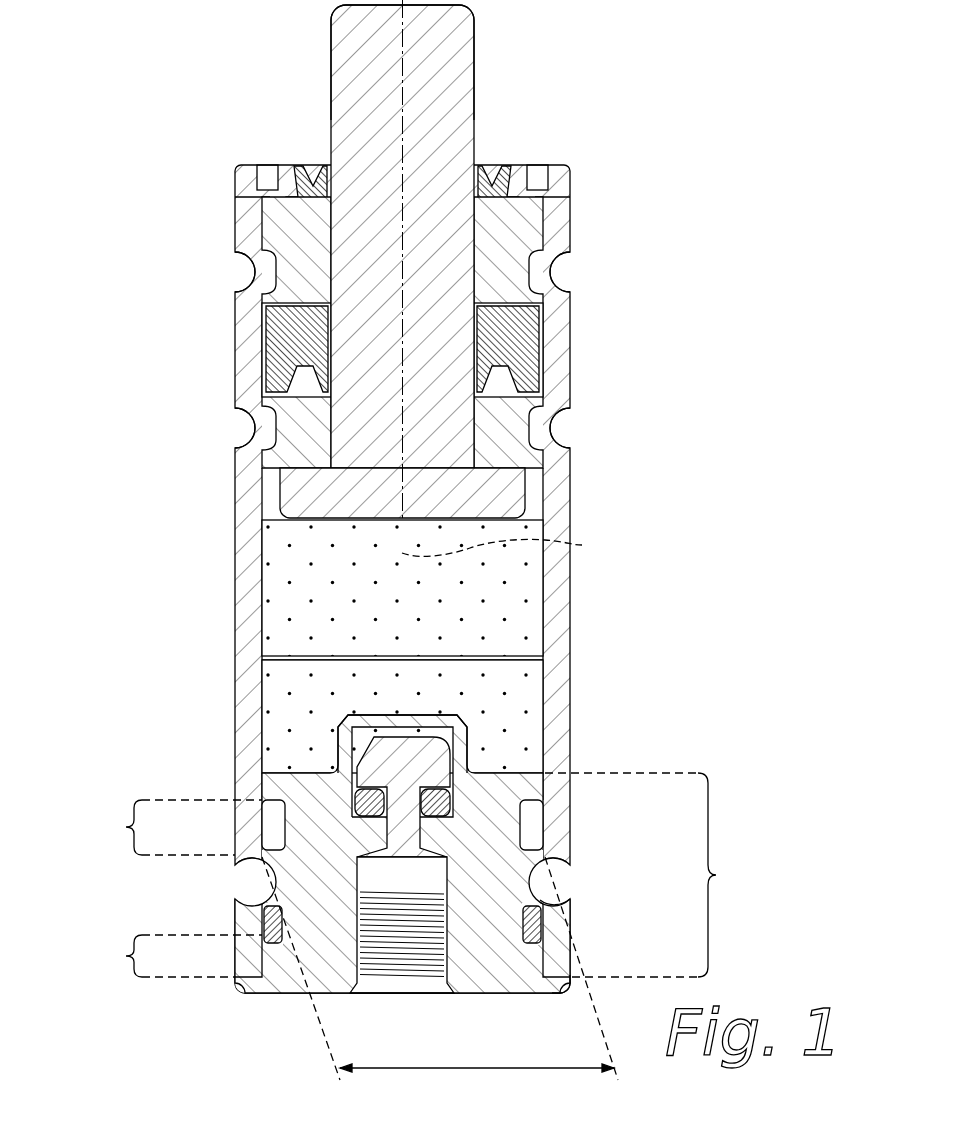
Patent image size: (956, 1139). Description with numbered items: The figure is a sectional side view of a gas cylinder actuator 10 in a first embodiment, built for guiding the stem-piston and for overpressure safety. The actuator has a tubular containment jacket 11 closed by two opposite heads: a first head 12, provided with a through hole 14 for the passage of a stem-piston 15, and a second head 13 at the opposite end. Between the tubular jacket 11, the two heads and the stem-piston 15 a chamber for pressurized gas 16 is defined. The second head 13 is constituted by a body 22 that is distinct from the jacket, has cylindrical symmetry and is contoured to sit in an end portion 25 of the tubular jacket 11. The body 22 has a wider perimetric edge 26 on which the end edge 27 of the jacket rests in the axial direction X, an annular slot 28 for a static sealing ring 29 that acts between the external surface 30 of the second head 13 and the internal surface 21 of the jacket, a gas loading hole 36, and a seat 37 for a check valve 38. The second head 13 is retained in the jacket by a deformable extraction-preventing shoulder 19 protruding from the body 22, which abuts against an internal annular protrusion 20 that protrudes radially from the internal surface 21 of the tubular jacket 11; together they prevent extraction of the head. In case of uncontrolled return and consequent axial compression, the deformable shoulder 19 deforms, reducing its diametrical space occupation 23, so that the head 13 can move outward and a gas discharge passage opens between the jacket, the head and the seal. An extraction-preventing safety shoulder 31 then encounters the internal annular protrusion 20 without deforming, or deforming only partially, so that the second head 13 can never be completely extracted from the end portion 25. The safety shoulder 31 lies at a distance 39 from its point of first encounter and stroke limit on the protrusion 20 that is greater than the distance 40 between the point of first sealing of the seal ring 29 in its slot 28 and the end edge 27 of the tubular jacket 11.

The gas cylinder actuator 10 is at (396, 549).
The tubular containment jacket 11 is at (578, 672).
The first head 12 is at (535, 276).
The second head 13 is at (530, 820).
The through hole 14 is at (395, 261).
The stem-piston 15 is at (345, 60).
The chamber for pressurized gas 16 is at (373, 618).
The deformable extraction-preventing shoulder 19 is at (258, 874).
The internal annular protrusion 20 is at (262, 886).
The internal surface 21 is at (287, 600).
The body 22 is at (338, 874).
The diametrical space occupation 23 is at (457, 1068).
The end portion 25 is at (665, 875).
The wider perimetric edge 26 is at (248, 985).
The end edge 27 is at (555, 972).
The annular slot 28 is at (555, 877).
The static sealing ring 29 is at (275, 950).
The external surface 30 is at (300, 930).
The extraction-preventing safety shoulder 31 is at (275, 787).
The gas loading hole 36 is at (407, 955).
The seat 37 is at (467, 735).
The check valve 38 is at (422, 755).
The distance 39 is at (173, 827).
The distance 40 is at (173, 956).
The axial direction X is at (505, 553).